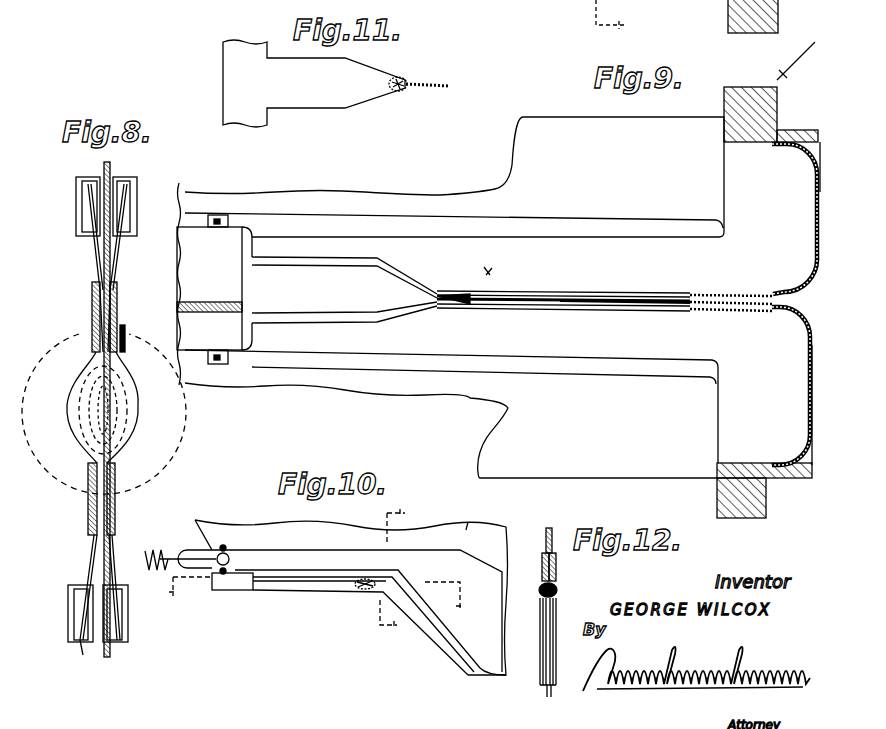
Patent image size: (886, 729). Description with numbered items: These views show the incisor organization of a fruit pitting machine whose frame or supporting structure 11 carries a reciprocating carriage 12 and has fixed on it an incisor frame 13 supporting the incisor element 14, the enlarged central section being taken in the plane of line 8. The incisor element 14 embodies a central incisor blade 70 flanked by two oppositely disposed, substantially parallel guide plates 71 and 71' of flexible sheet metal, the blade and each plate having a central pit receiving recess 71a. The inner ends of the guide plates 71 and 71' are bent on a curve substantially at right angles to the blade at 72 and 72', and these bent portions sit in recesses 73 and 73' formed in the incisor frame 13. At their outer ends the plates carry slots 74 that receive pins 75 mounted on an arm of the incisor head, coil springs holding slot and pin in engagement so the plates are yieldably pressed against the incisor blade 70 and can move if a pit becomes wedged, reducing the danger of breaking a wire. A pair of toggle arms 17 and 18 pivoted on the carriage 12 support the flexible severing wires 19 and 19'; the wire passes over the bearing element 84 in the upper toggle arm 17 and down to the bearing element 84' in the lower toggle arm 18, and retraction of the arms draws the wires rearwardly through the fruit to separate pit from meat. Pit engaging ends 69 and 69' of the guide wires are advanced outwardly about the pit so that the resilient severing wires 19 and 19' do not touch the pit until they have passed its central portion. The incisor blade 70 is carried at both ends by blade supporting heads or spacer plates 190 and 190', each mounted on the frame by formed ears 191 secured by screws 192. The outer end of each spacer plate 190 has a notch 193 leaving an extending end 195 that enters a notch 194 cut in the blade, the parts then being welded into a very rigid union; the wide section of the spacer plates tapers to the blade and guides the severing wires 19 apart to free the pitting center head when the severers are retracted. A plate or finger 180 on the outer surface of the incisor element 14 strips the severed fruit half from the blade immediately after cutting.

In FIG. 9, the section line 8— 8 is at (616, 17).
In FIG. 10, the frame or supporting structure 11 is at (318, 602).
In FIG. 10, the reciprocating carriage 12 is at (402, 573).
In FIG. 9, the incisor frame 13 is at (798, 61).
In FIG. 9, the incisor element 14 is at (490, 273).
In FIG. 8, the toggle arm 17 is at (76, 181).
In FIG. 8, the toggle arm 18 is at (68, 643).
In FIG. 8, the severing wire 19 is at (100, 412).
In FIG. 9, the severing wire 19 is at (563, 311).
In FIG. 9, the severing wire 19' is at (563, 278).
In FIG. 8, the pit engaging end 69 is at (104, 414).
In FIG. 8, the pit engaging end 69' is at (72, 398).
In FIG. 8, the incisor blade 70 is at (102, 304).
In FIG. 9, the incisor blade 70 is at (708, 296).
In FIG. 10, the incisor blade 70 is at (467, 519).
In FIG. 12, the incisor blade 70 is at (546, 536).
In FIG. 8, the guide plate 71 is at (123, 407).
In FIG. 9, the guide plate 71 is at (625, 316).
In FIG. 10, the guide plate 71 is at (486, 535).
In FIG. 12, the guide plate 71 is at (566, 567).
In FIG. 8, the guide plate 71' is at (80, 407).
In FIG. 9, the guide plate 71' is at (568, 285).
In FIG. 12, the guide plate 71' is at (532, 567).
In FIG. 9, the pit receiving recess 71a is at (650, 294).
In FIG. 9, the bent portion 72 is at (792, 386).
In FIG. 9, the bent portion 72' is at (796, 218).
In FIG. 9, the recess 73 is at (498, 434).
In FIG. 9, the recess 73' is at (498, 236).
In FIG. 10, the slot 74 is at (190, 549).
In FIG. 10, the pin 75 is at (231, 560).
In FIG. 8, the bearing element 84 is at (128, 405).
In FIG. 8, the bearing element 84' is at (74, 661).
In FIG. 8, the plate or finger 180 is at (125, 330).
In FIG. 11, the spacer plate 190 is at (314, 85).
In FIG. 9, the spacer plate 190 is at (344, 243).
In FIG. 12, the spacer plate 190 is at (532, 634).
In FIG. 10, the spacer plate 190' is at (359, 622).
In FIG. 9, the ear 191 is at (244, 225).
In FIG. 9, the screw 192 is at (217, 214).
In FIG. 11, the notch 193 is at (403, 75).
In FIG. 10, the notch 193 is at (365, 586).
In FIG. 12, the notch 193 is at (556, 588).
In FIG. 11, the notch 194 is at (400, 93).
In FIG. 10, the notch 194 is at (392, 596).
In FIG. 12, the notch 194 is at (548, 598).
In FIG. 10, the extending end 195 is at (355, 579).